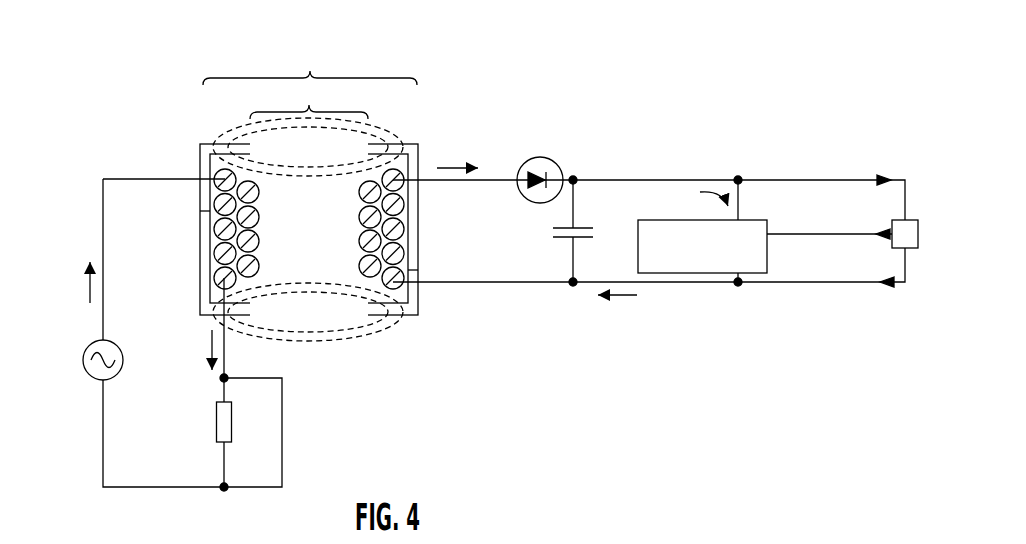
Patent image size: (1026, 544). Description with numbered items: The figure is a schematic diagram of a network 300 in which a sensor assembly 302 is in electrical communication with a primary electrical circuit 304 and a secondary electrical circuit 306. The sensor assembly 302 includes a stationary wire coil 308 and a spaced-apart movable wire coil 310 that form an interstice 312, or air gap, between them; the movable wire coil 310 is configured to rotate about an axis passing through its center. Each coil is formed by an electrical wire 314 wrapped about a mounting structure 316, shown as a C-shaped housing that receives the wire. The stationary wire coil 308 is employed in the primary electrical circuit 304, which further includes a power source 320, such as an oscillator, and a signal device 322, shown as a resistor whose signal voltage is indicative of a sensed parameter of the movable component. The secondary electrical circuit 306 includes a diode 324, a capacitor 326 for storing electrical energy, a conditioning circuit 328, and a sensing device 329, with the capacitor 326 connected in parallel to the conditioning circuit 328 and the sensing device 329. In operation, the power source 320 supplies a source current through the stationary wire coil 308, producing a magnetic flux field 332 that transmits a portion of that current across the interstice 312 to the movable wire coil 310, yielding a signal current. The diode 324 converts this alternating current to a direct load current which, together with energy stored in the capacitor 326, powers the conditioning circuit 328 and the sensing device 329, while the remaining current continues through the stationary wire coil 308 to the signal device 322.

The network 300 is at (52, 56).
The sensor assembly 302 is at (310, 64).
The primary electrical circuit 304 is at (82, 165).
The secondary electrical circuit 306 is at (679, 120).
The stationary wire coil 308 is at (190, 164).
The movable wire coil 310 is at (425, 152).
The interstice 312 is at (309, 99).
The electrical wire 314 is at (257, 211).
The mounting structure 316 is at (200, 211).
The power source 320 is at (92, 377).
The signal device 322 is at (216, 410).
The diode 324 is at (557, 163).
The capacitor 326 is at (586, 226).
The conditioning circuit 328 is at (637, 250).
The sensing device 329 is at (910, 219).
The magnetic flux field 332 is at (397, 133).